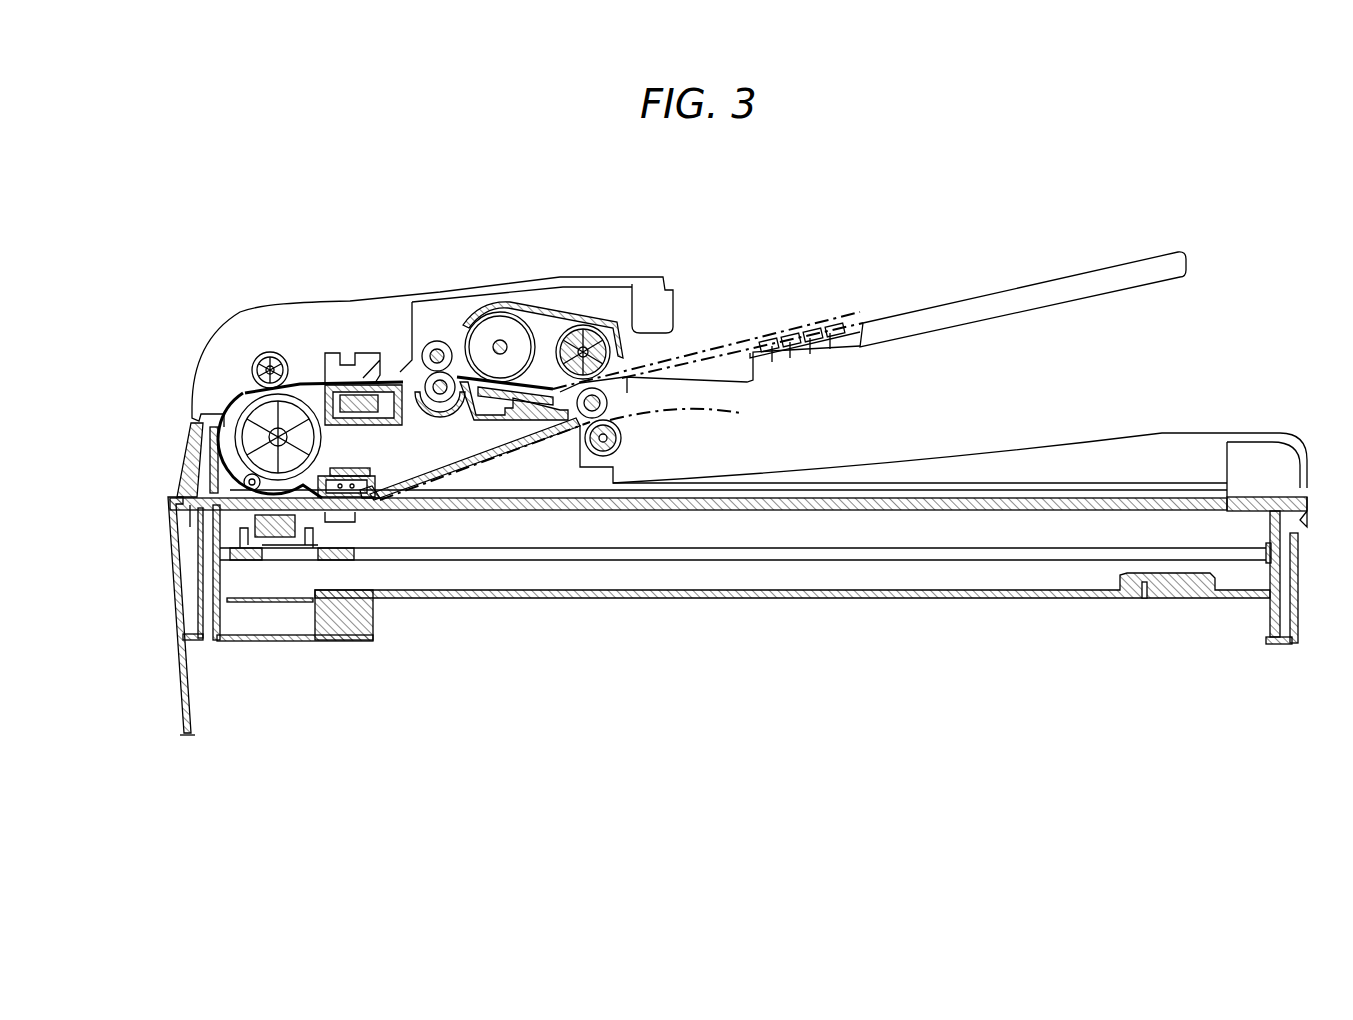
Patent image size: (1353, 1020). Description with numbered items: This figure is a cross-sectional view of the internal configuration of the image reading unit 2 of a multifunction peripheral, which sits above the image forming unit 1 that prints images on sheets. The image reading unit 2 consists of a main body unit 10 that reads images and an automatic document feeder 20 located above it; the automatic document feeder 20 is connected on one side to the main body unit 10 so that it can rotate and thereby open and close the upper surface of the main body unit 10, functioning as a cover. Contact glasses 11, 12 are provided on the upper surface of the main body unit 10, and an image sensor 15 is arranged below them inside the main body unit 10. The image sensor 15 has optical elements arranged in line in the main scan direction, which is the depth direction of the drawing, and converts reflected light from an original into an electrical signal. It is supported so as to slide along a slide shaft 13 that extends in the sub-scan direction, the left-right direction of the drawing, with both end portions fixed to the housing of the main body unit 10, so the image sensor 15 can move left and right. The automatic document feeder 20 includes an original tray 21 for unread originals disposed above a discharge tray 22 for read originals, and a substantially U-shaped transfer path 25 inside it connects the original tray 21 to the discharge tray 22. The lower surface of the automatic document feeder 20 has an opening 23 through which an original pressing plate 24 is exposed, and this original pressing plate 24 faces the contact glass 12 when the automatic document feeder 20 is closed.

The image forming unit 1 is at (152, 628).
The image reading unit 2 is at (112, 392).
The main body unit 10 is at (152, 490).
The contact glass 11 is at (634, 508).
The contact glass 12 is at (340, 512).
The slide shaft 13 is at (716, 553).
The image sensor 15 is at (272, 530).
The automatic document feeder 20 is at (152, 305).
The original tray 21 is at (1018, 283).
The discharge tray 22 is at (1018, 458).
The opening 23 is at (368, 490).
The original pressing plate 24 is at (338, 490).
The transfer path 25 is at (793, 318).